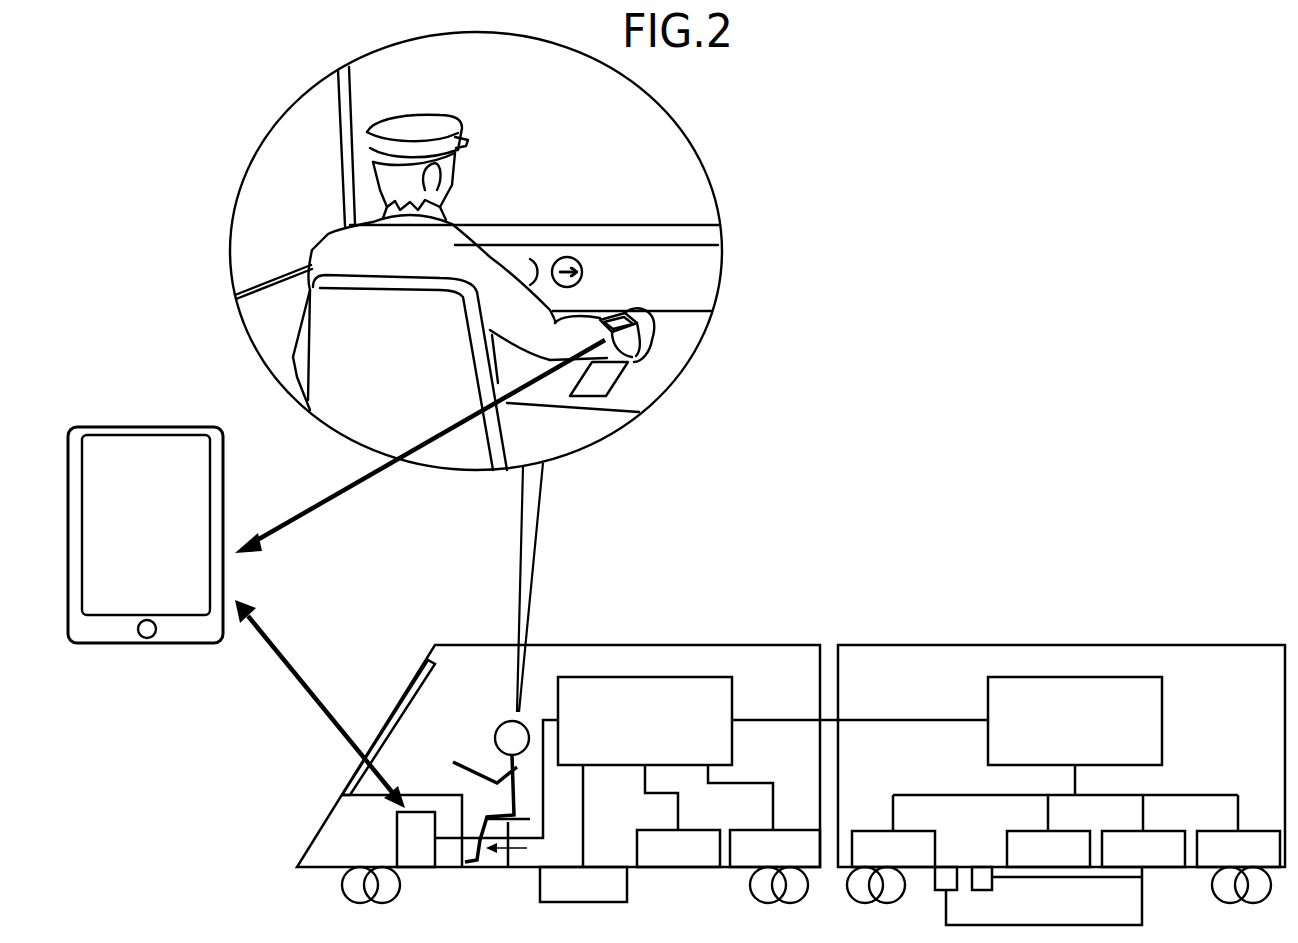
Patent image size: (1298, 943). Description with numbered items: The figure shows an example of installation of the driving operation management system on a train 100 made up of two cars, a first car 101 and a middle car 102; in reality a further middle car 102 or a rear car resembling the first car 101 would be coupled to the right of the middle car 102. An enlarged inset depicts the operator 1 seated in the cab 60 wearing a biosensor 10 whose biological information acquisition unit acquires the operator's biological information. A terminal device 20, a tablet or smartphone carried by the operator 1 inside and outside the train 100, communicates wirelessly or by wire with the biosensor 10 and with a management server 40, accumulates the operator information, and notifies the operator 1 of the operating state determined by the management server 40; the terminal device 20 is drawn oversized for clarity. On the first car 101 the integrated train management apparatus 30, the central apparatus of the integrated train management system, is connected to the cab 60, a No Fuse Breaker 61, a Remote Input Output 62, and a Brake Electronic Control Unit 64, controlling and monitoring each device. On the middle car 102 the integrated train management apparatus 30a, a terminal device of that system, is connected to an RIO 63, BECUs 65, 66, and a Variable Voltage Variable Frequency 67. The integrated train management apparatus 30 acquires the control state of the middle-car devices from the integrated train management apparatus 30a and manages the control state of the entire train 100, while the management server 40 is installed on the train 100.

The operator 1 is at (498, 730).
The biosensor 10 is at (613, 317).
The terminal device 20 is at (134, 427).
The integrated train management apparatus 30 is at (649, 677).
The integrated train management apparatus 30a is at (1113, 677).
The management server 40 is at (397, 849).
The cab 60 is at (420, 795).
The No Fuse Breaker (NFB) 61 is at (595, 902).
The Remote Input Output (RIO) 62 is at (690, 830).
The RIO 63 is at (1154, 830).
The Brake Electronic Control Unit (BECU) 64 is at (782, 830).
The BECU 65 is at (902, 830).
The BECU 66 is at (1246, 830).
The Variable Voltage Variable Frequency (VVVF) 67 is at (1061, 830).
The train 100 is at (845, 592).
The first car 101 is at (737, 646).
The middle car 102 is at (1201, 646).